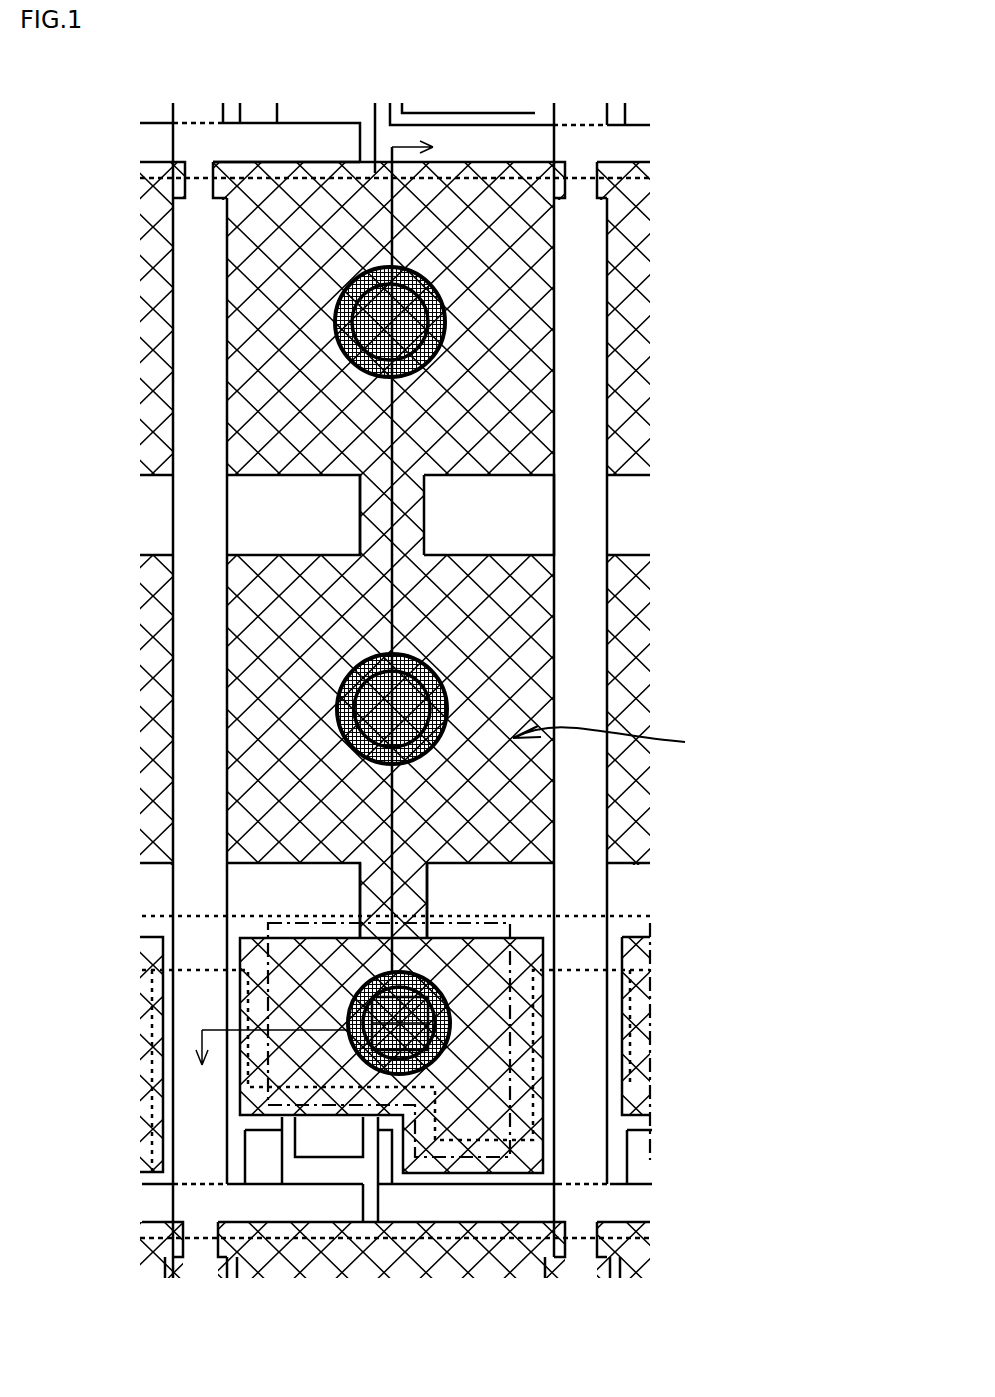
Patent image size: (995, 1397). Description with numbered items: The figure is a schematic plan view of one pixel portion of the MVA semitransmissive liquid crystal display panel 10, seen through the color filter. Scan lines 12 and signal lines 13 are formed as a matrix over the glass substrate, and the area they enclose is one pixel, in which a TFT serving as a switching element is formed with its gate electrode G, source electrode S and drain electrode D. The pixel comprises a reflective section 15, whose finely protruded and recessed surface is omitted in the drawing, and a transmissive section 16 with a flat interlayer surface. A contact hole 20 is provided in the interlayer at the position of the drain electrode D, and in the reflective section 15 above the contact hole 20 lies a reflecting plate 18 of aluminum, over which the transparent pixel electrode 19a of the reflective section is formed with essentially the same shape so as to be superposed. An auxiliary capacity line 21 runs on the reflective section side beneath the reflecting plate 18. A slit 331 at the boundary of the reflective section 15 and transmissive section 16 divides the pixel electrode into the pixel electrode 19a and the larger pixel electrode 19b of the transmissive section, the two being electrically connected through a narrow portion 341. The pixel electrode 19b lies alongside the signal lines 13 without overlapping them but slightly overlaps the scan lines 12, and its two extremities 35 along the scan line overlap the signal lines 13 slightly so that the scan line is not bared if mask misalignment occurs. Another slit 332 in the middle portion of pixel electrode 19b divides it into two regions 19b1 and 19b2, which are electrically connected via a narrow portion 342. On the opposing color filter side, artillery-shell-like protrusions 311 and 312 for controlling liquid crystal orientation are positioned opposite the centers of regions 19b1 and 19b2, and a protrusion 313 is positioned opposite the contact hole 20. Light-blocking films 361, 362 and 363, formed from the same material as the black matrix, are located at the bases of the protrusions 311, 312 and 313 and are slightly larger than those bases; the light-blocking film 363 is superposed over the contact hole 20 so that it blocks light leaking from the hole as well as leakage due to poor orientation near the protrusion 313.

The semitransmissive liquid crystal display panel 10 is at (108, 86).
The scan line 12 is at (518, 141).
The signal line 13 is at (200, 368).
The reflective section 15 is at (547, 965).
The transmissive section 16 is at (616, 743).
The reflecting plate 18 is at (461, 1080).
The pixel electrode of the reflective section 19a is at (528, 1027).
The pixel electrode of the transmissive section 19b is at (516, 680).
The first region of pixel electrode 19b 19b1 is at (527, 580).
The second region of pixel electrode 19b 19b2 is at (530, 443).
The contact hole 20 is at (345, 1007).
The auxiliary capacity line 21 is at (240, 926).
The protrusion 311 is at (412, 690).
The protrusion 312 is at (418, 327).
The protrusion 313 is at (447, 928).
The slit 331 is at (278, 897).
The slit 332 is at (270, 518).
The narrow portion 341 is at (372, 893).
The narrow portion 342 is at (377, 510).
The extremities of pixel electrode 19b 35 is at (212, 163).
The light-blocking film 361 is at (403, 708).
The light-blocking film 362 is at (403, 309).
The light-blocking film 363 is at (546, 1025).
The gate electrode G is at (303, 1182).
The source electrode S is at (335, 1207).
The drain electrode D is at (337, 1137).
The thin film transistor TFT is at (407, 1310).